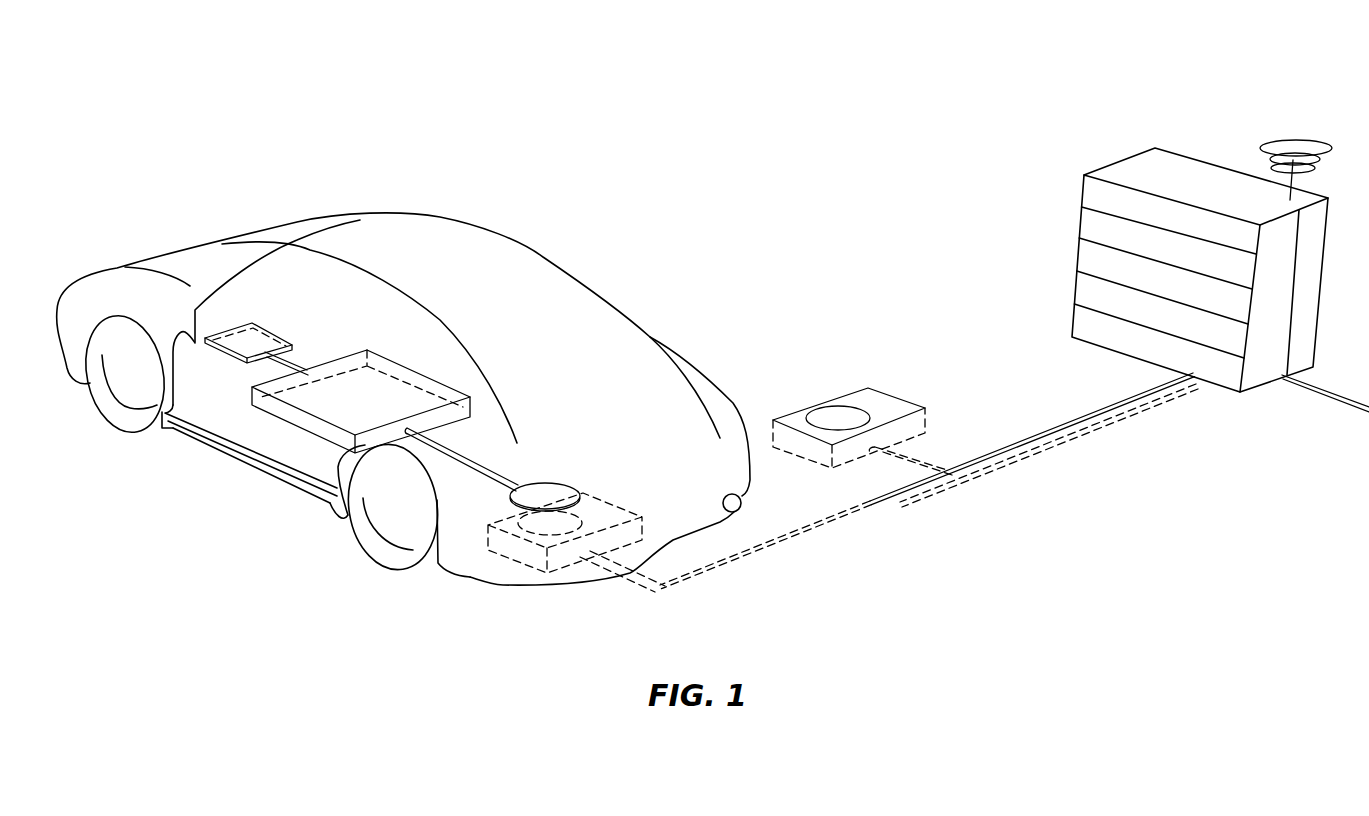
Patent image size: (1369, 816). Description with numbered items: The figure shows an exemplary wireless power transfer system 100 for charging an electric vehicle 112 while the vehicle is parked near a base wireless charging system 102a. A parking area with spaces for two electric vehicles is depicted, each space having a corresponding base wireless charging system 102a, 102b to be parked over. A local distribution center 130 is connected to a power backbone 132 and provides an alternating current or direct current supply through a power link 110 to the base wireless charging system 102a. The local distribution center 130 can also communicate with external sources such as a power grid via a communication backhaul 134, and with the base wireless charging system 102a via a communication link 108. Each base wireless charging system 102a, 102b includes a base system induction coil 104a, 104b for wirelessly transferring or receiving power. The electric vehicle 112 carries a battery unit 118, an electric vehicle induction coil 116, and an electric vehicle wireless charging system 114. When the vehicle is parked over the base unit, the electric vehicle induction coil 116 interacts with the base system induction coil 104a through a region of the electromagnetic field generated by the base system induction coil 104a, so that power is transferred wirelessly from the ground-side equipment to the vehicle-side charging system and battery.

The wireless power transfer system 100 is at (372, 83).
The base wireless charging system 102a is at (505, 520).
The base wireless charging system 102b is at (800, 410).
The base system induction coil 104a is at (619, 476).
The base system induction coil 104b is at (847, 410).
The communication link 108 is at (1062, 418).
The power link 110 is at (1057, 443).
The electric vehicle 112 is at (183, 250).
The electric vehicle wireless charging system 114 is at (258, 384).
The electric vehicle induction coil 116 is at (543, 490).
The battery unit 118 is at (270, 326).
The local distribution center 130 is at (1123, 165).
The power backbone 132 is at (1343, 400).
The communication backhaul 134 is at (1297, 140).